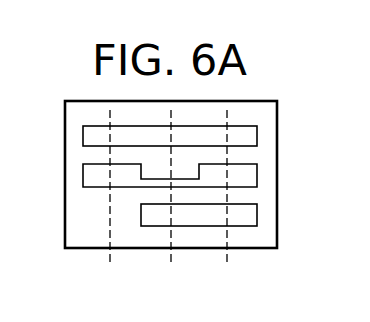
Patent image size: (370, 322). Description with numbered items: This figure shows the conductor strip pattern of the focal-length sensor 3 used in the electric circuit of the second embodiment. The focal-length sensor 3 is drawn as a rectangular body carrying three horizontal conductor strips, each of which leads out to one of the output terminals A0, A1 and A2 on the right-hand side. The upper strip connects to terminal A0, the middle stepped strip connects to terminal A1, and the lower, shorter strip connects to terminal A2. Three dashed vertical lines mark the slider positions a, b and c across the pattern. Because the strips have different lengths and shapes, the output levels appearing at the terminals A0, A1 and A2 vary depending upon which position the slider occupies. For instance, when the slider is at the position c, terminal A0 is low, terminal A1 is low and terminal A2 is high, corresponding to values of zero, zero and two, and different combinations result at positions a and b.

The focal-length sensor 3 is at (65, 214).
The terminal A0 is at (257, 135).
The terminal A1 is at (257, 178).
The terminal A2 is at (257, 215).
The position a is at (227, 200).
The position b is at (171, 200).
The position c is at (110, 200).